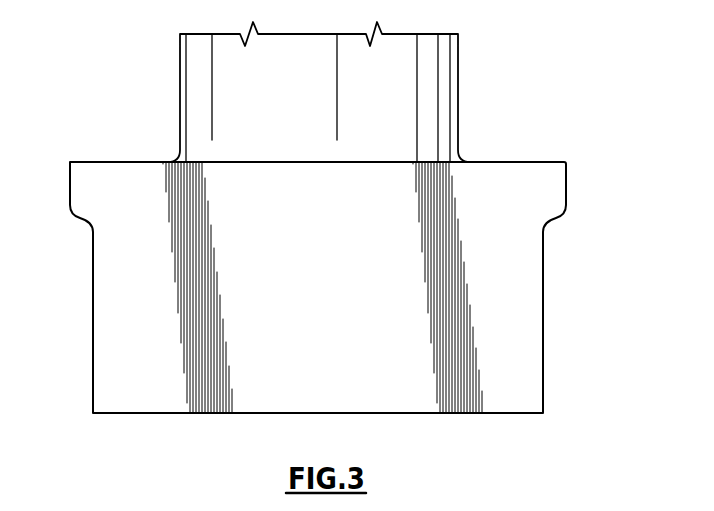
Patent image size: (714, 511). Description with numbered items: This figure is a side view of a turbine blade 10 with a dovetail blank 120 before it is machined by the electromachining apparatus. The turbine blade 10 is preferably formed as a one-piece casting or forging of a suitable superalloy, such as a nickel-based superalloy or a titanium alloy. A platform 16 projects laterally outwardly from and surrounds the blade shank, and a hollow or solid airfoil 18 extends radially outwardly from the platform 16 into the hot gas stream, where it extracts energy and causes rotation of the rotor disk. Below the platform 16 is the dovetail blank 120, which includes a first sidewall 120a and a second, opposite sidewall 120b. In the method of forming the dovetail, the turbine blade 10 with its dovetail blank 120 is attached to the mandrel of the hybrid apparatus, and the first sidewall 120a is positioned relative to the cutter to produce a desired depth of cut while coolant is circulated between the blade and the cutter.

The turbine blade 10 is at (93, 100).
The platform 16 is at (102, 162).
The airfoil 18 is at (200, 58).
The dovetail blank 120 is at (575, 382).
The first sidewall 120a is at (543, 312).
The second sidewall 120b is at (93, 307).